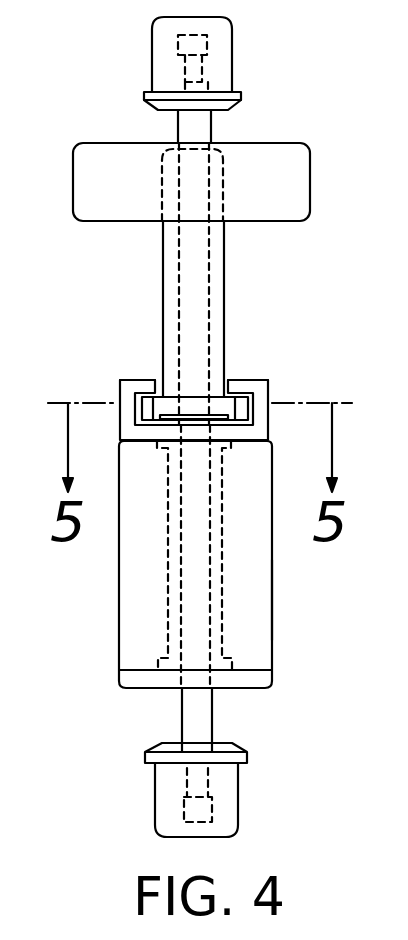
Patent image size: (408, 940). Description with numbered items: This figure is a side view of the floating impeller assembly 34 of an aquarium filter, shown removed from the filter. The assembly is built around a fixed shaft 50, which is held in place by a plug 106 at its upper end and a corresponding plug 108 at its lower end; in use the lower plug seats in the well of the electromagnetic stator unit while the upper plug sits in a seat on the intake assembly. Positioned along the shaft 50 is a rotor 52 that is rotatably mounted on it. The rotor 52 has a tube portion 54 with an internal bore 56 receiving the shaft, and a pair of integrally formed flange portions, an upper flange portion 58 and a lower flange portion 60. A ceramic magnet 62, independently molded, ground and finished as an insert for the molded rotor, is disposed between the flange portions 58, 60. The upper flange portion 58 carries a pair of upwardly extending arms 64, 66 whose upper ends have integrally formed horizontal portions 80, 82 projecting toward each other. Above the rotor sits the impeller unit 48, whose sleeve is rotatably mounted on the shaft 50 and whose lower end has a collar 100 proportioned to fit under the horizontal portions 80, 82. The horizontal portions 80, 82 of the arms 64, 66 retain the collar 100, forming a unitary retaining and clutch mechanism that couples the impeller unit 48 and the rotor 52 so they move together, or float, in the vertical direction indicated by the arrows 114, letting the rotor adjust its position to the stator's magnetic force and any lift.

The floating impeller assembly 34 is at (110, 622).
The impeller unit 48 is at (224, 268).
The fixed shaft 50 is at (209, 127).
The rotor 52 is at (272, 650).
The tube portion 54 is at (225, 578).
The internal bore 56 is at (166, 567).
The upper flange portion 58 is at (250, 437).
The lower flange portion 60 is at (268, 687).
The ceramic magnet 62 is at (258, 620).
The arm 64 is at (120, 382).
The arm 66 is at (266, 396).
The horizontal portion 80 is at (138, 380).
The horizontal portion 82 is at (246, 382).
The collar 100 is at (172, 413).
The plug 106 is at (232, 52).
The plug 108 is at (238, 790).
The arrows 114 is at (65, 233).